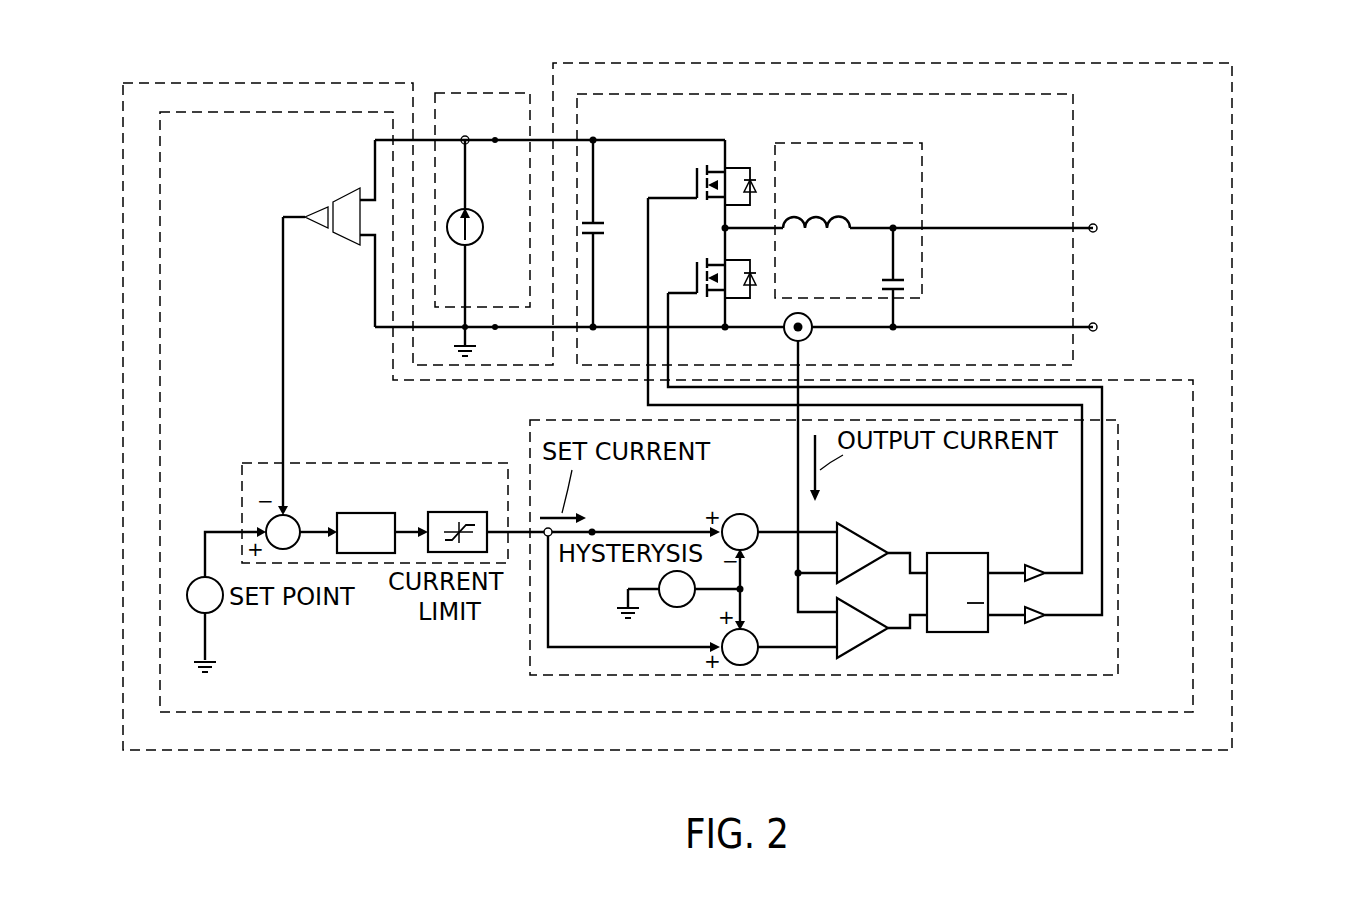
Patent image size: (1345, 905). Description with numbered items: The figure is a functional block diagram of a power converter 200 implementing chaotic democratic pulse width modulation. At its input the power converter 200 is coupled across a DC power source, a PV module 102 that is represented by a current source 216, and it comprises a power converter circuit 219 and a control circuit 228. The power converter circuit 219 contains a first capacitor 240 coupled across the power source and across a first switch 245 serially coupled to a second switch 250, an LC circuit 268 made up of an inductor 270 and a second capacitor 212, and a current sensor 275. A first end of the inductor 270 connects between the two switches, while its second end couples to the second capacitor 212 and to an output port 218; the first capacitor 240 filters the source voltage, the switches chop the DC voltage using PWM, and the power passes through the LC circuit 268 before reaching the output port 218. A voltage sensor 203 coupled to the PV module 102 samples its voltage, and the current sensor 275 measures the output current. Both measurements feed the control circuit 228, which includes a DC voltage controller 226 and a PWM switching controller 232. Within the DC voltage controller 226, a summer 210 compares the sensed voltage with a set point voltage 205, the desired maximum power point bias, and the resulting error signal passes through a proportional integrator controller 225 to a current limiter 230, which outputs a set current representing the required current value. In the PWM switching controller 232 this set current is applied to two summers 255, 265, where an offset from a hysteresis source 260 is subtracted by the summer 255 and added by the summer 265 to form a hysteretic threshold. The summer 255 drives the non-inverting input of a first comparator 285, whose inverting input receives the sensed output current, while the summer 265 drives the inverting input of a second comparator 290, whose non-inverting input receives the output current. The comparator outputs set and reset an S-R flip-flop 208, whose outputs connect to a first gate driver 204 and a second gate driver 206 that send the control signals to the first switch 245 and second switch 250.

The power converter 200 is at (1234, 90).
The PV module 102 is at (493, 92).
The voltage sensor 203 is at (351, 188).
The current source 216 is at (478, 212).
The first capacitor 240 is at (603, 218).
The first switch 245 is at (695, 190).
The second switch 250 is at (697, 281).
The inductor 270 is at (826, 224).
The current sensor 275 is at (806, 313).
The LC circuit 268 is at (925, 178).
The second capacitor 212 is at (905, 270).
The output port 218 is at (1097, 284).
The power converter circuit 219 is at (1082, 120).
The control circuit 228 is at (1050, 718).
The DC voltage controller 226 is at (348, 462).
The summer 210 is at (268, 520).
The proportional integrator (PI) controller 225 is at (368, 512).
The current limiter 230 is at (460, 512).
The set point voltage 205 is at (220, 612).
The PWM switching controller 232 is at (1120, 484).
The summer 255 is at (743, 513).
The hysteresis source 260 is at (657, 582).
The summer 265 is at (756, 634).
The first comparator 285 is at (862, 535).
The second comparator 290 is at (866, 620).
The S-R flip-flop 208 is at (998, 519).
The first gate driver 204 is at (1034, 560).
The second gate driver 206 is at (1040, 628).